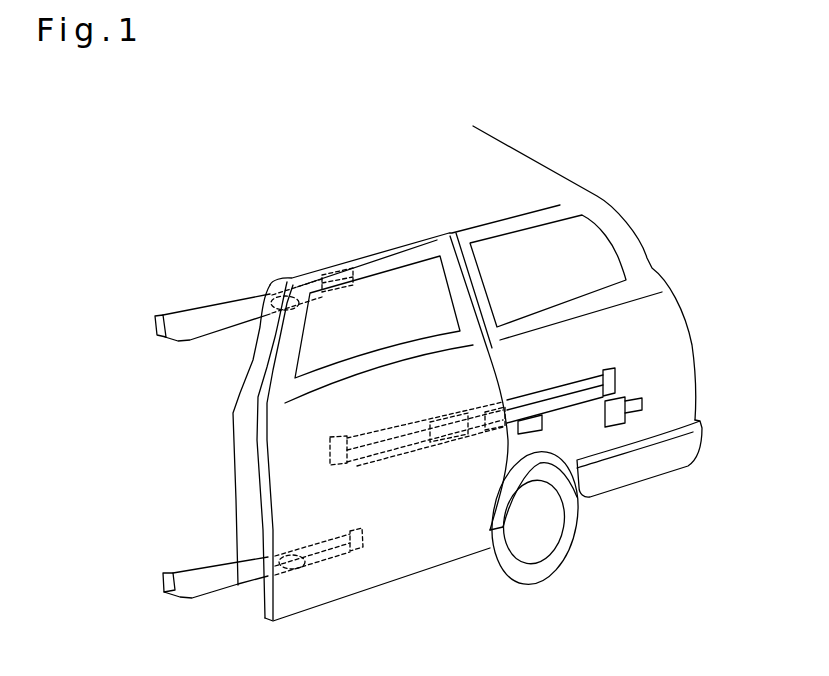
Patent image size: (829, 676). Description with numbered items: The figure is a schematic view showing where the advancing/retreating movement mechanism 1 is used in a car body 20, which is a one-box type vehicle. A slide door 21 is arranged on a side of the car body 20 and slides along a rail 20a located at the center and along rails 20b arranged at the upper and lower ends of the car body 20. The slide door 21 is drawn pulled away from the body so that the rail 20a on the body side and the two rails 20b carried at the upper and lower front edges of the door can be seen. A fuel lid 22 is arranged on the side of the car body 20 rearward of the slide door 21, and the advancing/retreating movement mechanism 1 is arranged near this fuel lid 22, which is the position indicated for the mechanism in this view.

The advancing/retreating movement mechanism 1 is at (651, 397).
The car body 20 is at (569, 158).
The rail 20a is at (550, 390).
The rails 20b is at (203, 323).
The slide door 21 is at (386, 573).
The fuel lid 22 is at (626, 398).